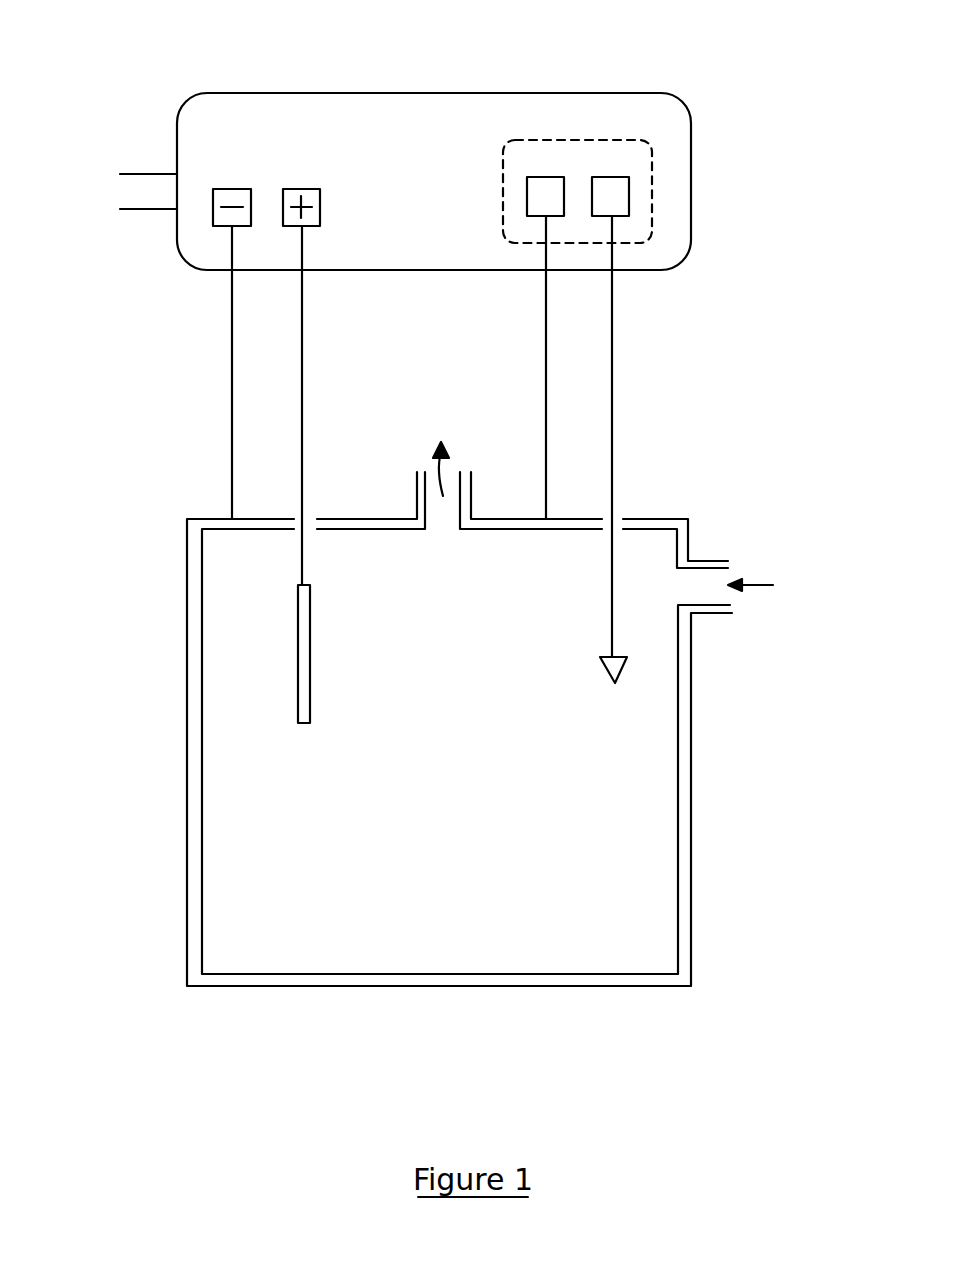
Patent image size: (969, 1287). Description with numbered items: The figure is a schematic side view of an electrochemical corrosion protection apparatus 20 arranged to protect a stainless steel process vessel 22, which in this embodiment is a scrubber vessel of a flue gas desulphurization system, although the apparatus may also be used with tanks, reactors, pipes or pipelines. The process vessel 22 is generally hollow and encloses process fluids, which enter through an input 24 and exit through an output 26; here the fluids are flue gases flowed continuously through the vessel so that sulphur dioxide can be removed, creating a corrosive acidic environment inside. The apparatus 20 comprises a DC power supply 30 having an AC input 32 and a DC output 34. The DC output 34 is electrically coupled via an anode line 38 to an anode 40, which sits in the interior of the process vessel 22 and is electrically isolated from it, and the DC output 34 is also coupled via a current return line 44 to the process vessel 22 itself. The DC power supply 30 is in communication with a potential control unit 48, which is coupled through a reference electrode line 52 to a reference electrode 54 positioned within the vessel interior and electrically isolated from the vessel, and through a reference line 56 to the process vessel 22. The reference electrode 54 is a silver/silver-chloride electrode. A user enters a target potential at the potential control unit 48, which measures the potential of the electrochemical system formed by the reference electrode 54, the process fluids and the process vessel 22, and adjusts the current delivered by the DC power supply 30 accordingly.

The electrochemical corrosion protection apparatus 20 is at (800, 87).
The stainless steel process vessel 22 is at (193, 905).
The input 24 is at (708, 592).
The output 26 is at (470, 500).
The DC power supply 30 is at (195, 95).
The AC input 32 is at (142, 168).
The DC output 34 is at (212, 288).
The anode line 38 is at (303, 330).
The anode 40 is at (307, 658).
The current return line 44 is at (233, 413).
The potential control unit 48 is at (652, 200).
The reference electrode line 52 is at (612, 372).
The reference electrode 54 is at (622, 664).
The reference line 56 is at (546, 423).